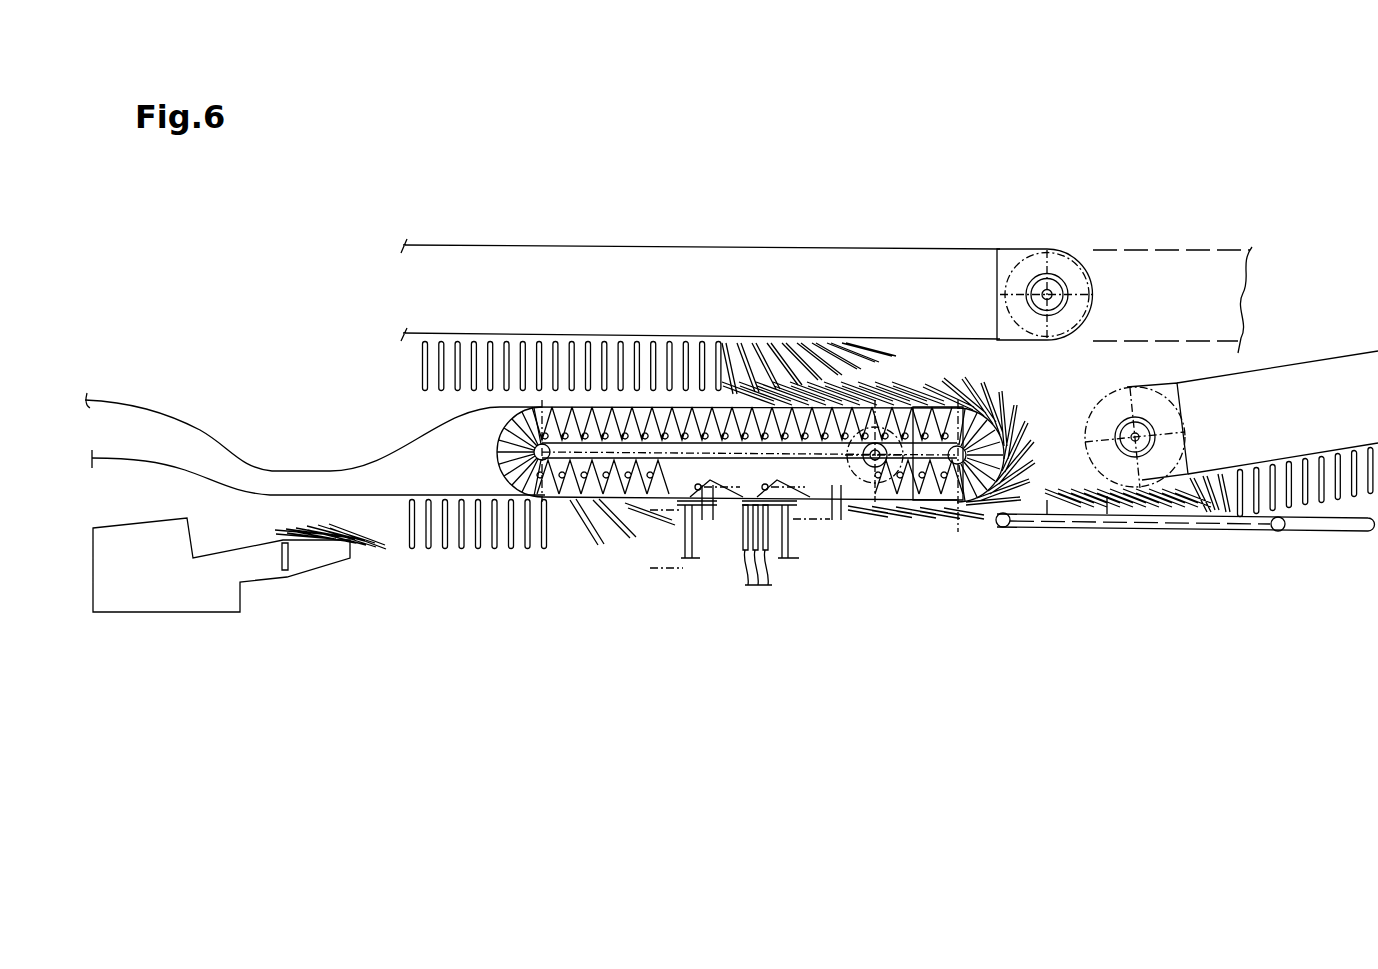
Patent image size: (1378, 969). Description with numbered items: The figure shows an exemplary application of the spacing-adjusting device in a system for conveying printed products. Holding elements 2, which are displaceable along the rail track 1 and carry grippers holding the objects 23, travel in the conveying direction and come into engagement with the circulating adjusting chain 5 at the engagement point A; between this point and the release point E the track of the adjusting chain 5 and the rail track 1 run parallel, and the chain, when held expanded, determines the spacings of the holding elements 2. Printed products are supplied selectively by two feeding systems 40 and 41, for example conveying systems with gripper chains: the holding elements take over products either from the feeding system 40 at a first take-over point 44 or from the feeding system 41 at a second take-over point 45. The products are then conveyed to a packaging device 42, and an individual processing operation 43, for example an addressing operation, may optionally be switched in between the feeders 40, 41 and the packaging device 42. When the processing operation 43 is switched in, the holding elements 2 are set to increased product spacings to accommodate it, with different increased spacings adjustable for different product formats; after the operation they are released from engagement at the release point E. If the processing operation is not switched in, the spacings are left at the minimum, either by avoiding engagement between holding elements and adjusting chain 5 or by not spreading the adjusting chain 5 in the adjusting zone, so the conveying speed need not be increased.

The rail track 1 is at (170, 463).
The holding elements 2 is at (497, 463).
The adjusting chain 5 is at (805, 410).
The objects 23 is at (440, 537).
The feeding system 40 is at (690, 280).
The feeding system 41 is at (1285, 428).
The packaging device 42 is at (162, 585).
The individual processing operation 43 is at (814, 536).
The first take-over point 44 is at (759, 400).
The second take-over point 45 is at (962, 525).